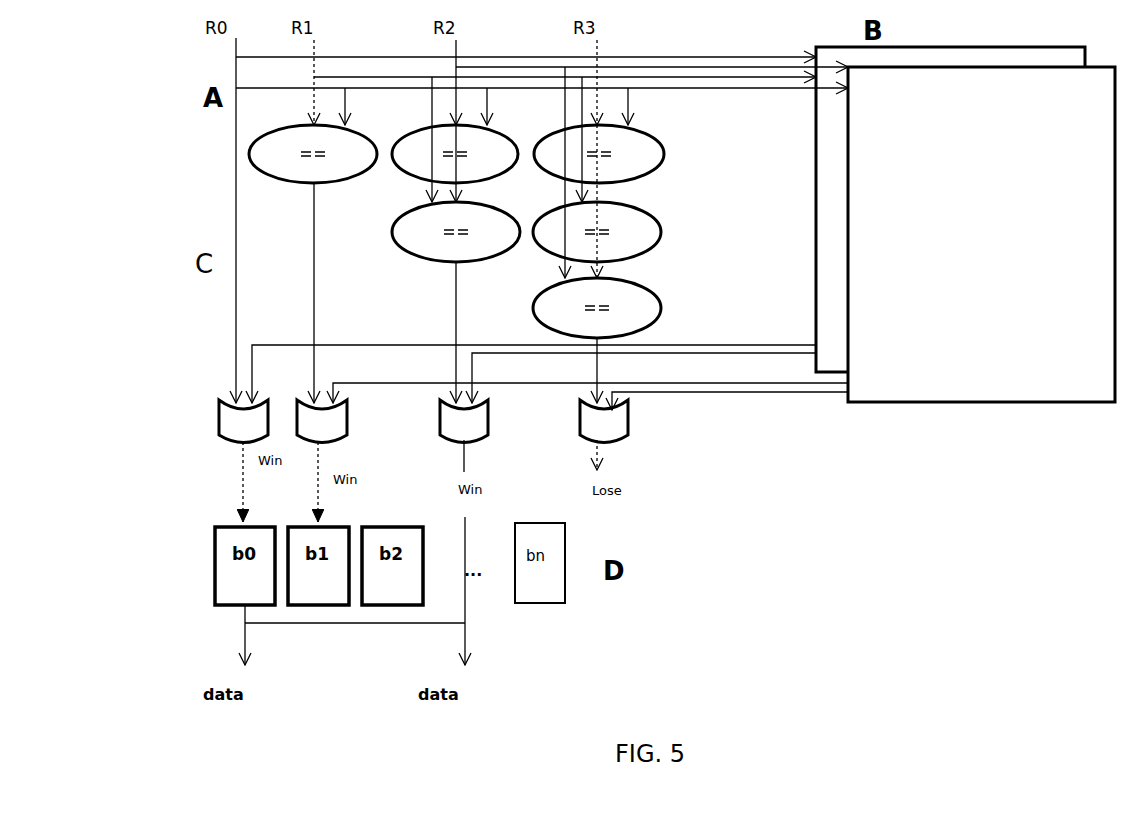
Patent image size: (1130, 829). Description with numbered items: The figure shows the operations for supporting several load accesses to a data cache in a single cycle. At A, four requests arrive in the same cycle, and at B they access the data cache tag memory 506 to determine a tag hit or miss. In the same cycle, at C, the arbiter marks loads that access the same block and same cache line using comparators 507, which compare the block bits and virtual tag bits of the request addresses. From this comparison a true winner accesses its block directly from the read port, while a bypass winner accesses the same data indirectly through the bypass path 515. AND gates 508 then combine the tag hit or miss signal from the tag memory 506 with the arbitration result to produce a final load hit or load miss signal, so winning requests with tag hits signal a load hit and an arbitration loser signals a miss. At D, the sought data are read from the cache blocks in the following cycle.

The data cache tag memory 506 is at (988, 193).
The comparators 507 is at (390, 226).
The AND gates 508 is at (293, 390).
The bypass path 515 is at (371, 651).